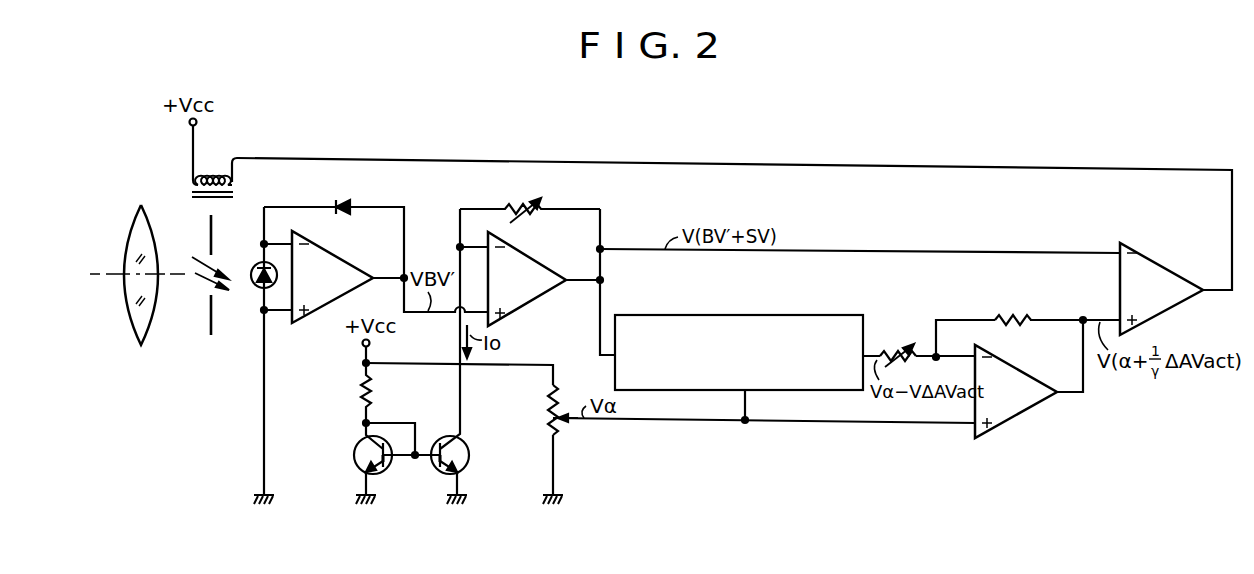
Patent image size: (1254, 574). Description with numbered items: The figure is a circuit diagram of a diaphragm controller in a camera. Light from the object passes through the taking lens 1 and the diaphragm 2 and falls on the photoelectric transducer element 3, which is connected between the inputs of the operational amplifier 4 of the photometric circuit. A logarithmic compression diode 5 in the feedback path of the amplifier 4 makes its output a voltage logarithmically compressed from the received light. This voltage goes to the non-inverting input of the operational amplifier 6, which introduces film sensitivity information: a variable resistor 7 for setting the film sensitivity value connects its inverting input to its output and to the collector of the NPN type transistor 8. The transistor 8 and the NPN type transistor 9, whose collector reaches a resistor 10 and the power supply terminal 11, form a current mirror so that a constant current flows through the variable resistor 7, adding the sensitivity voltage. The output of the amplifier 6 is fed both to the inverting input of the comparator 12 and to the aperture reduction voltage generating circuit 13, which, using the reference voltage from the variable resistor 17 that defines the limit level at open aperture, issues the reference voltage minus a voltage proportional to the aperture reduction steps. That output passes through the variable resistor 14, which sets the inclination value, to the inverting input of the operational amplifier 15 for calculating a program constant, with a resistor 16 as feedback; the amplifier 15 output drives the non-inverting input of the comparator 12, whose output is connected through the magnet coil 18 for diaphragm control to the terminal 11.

The taking lens 1 is at (128, 238).
The diaphragm 2 is at (210, 235).
The photoelectric transducer element 3 is at (259, 289).
The operational amplifier 4 is at (335, 253).
The logarithmic compression diode 5 is at (343, 198).
The operational amplifier 6 is at (520, 254).
The variable resistor 7 is at (513, 207).
The NPN type transistor 8 is at (468, 446).
The NPN type transistor 9 is at (360, 448).
The resistor 10 is at (371, 380).
The power supply terminal 11 is at (189, 122).
The comparator 12 is at (1137, 254).
The aperture reduction voltage generating circuit 13 is at (795, 315).
The variable resistor 14 is at (890, 347).
The operational amplifier 15 is at (1011, 372).
The resistor 16 is at (1013, 317).
The variable resistor 17 is at (551, 395).
The magnet coil 18 is at (218, 199).